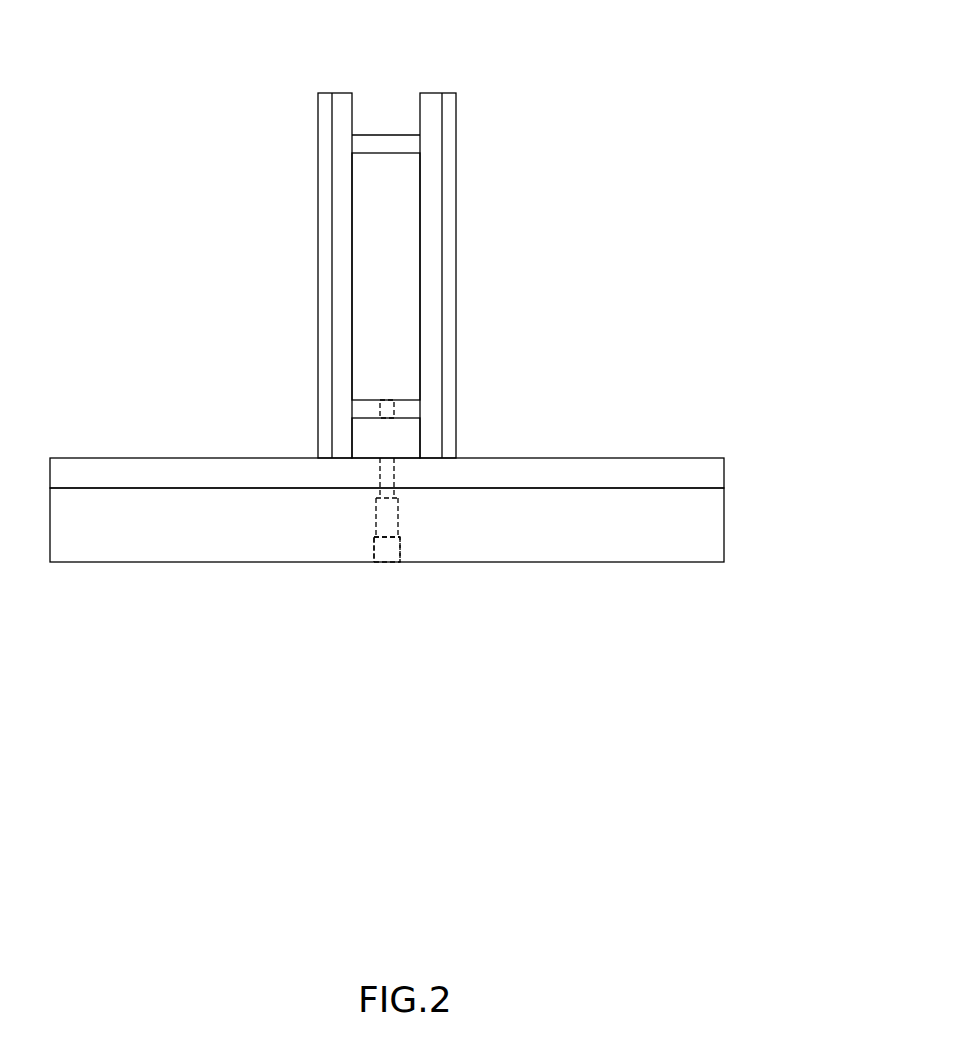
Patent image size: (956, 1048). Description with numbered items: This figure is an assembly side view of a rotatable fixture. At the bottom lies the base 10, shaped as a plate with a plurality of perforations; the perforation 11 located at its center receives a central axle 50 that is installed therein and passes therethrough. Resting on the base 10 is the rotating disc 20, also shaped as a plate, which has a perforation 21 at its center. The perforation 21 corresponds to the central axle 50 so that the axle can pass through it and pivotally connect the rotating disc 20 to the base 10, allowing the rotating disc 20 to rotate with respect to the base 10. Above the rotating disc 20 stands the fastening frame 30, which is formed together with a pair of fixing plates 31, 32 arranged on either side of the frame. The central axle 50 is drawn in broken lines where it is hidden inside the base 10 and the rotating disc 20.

The base 10 is at (724, 527).
The perforation 11 is at (400, 548).
The rotating disc 20 is at (724, 470).
The perforation 21 is at (394, 478).
The fastening frame 30 is at (386, 240).
The fixing plate 31 is at (456, 136).
The fixing plate 32 is at (318, 172).
The central axle 50 is at (386, 556).